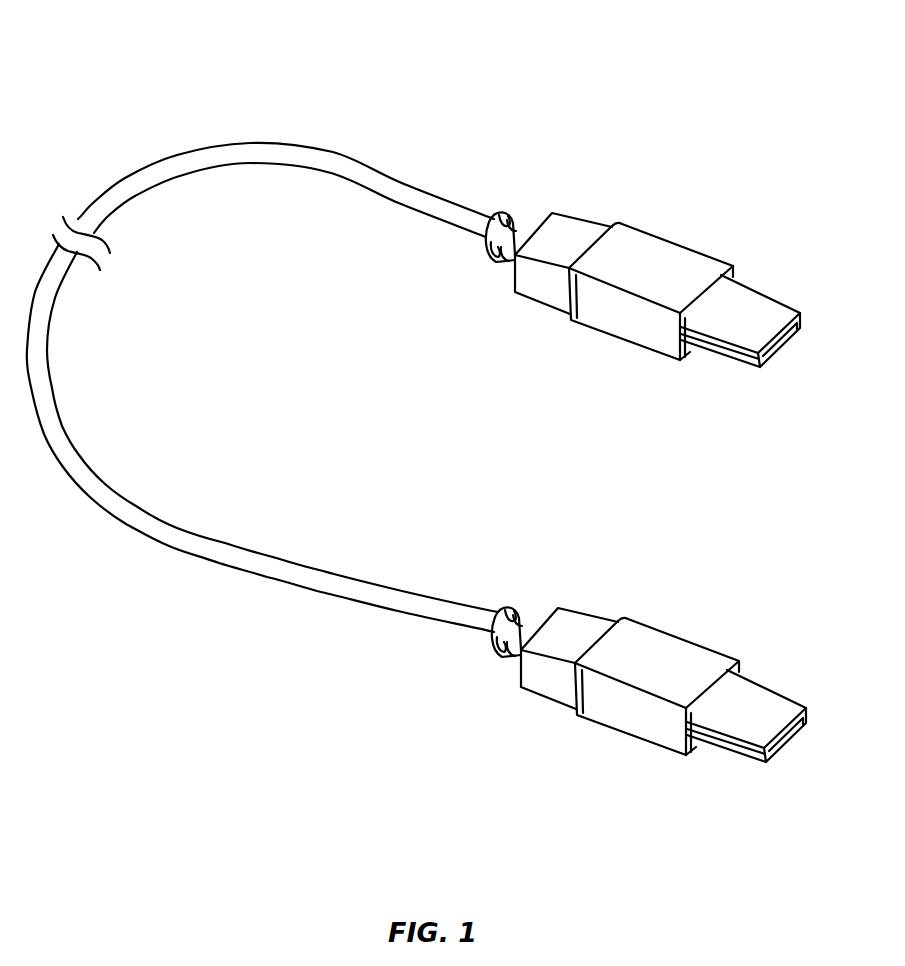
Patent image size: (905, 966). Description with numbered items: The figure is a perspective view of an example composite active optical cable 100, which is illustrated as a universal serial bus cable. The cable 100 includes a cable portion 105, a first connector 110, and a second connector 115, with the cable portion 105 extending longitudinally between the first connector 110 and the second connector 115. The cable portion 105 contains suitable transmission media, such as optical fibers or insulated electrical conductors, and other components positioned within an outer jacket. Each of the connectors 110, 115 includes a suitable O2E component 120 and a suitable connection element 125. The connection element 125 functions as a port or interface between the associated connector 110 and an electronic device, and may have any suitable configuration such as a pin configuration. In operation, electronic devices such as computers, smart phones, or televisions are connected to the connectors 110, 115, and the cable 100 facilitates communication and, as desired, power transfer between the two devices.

The composite active optical cable 100 is at (177, 70).
The cable portion 105 is at (408, 177).
The first connector 110 is at (692, 248).
The second connector 115 is at (727, 656).
The O2E component 120 is at (628, 350).
The connection element 125 is at (738, 373).